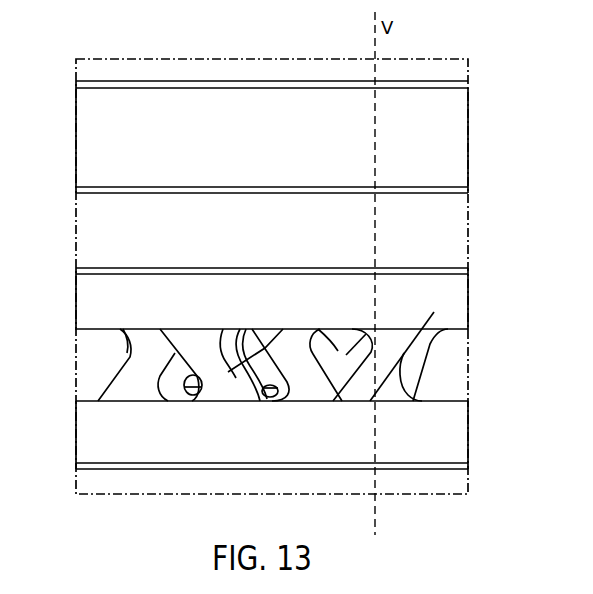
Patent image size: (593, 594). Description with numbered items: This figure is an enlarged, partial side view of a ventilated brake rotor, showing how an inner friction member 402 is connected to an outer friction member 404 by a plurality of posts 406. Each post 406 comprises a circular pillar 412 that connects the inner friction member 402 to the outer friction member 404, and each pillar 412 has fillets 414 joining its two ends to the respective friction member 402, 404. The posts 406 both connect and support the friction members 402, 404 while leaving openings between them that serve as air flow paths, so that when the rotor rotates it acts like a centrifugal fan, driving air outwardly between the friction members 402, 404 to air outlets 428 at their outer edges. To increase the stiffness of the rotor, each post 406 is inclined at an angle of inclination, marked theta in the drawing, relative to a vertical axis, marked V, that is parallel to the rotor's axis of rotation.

The inner friction member 402 is at (453, 431).
The outer friction member 404 is at (453, 296).
The post 406 is at (214, 403).
The circular pillar 412 is at (225, 372).
The fillet 414 is at (192, 334).
The air outlet 428 is at (178, 378).